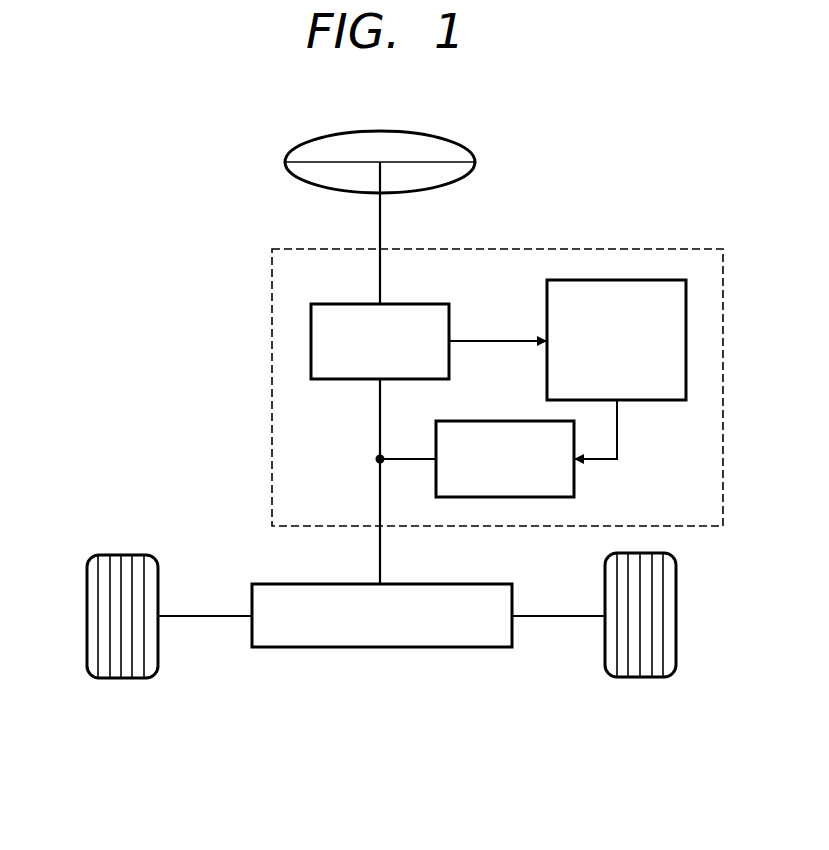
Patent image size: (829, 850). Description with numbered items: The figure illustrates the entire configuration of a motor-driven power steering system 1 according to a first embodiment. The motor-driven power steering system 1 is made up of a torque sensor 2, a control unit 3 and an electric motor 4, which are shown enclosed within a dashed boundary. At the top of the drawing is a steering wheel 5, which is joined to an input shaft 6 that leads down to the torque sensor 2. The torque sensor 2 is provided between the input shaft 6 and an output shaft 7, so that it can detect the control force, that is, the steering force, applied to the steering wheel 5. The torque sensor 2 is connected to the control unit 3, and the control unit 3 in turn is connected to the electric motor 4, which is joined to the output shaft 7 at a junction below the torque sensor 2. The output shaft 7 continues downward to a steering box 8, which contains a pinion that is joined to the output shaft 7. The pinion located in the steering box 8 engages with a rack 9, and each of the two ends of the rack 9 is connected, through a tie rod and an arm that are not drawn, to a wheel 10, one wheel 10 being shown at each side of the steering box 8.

The motor-driven power steering system 1 is at (620, 249).
The torque sensor 2 is at (408, 303).
The control unit 3 is at (686, 315).
The electric motor 4 is at (505, 421).
The steering wheel 5 is at (425, 131).
The input shaft 6 is at (381, 236).
The output shaft 7 is at (380, 421).
The steering box 8 is at (452, 584).
The rack 9 is at (205, 618).
The wheel 10 is at (87, 595).